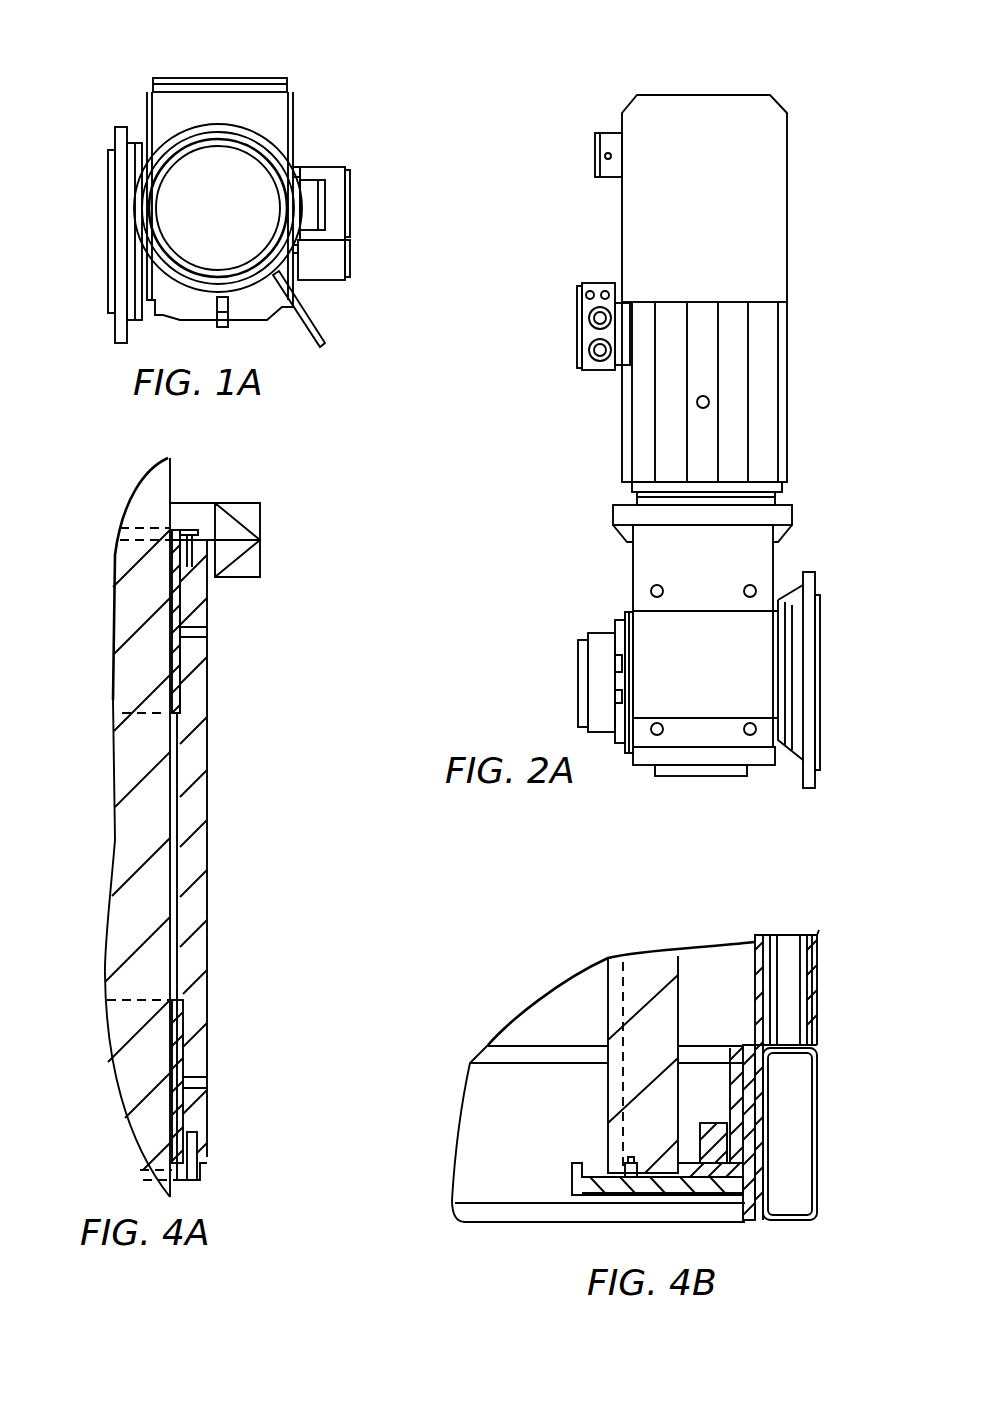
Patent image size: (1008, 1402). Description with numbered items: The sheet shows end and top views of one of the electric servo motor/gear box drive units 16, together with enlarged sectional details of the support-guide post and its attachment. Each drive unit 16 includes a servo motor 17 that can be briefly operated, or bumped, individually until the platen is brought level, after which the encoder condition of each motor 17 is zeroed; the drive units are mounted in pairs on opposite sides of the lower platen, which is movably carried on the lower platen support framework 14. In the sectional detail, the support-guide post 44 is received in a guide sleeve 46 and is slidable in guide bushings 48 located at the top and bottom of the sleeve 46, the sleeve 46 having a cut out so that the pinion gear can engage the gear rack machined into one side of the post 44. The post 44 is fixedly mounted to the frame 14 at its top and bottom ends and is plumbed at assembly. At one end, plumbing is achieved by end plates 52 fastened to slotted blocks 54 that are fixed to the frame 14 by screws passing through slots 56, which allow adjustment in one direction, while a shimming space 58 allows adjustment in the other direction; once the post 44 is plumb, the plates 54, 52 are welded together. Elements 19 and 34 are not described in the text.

In FIG. 4B, the lower platen support framework 14 is at (820, 990).
In FIG. 1A, the drive unit 16 is at (315, 105).
In FIG. 2A, the drive unit 16 is at (797, 203).
In FIG. 1A, the servo motor 17 is at (237, 168).
In FIG. 2A, the servo motor 17 is at (635, 228).
In FIG. 1A, the gearbox 19 is at (165, 77).
In FIG. 2A, the gearbox 19 is at (632, 606).
In FIG. 1A, the mounting plate 34 is at (123, 130).
In FIG. 2A, the mounting plate 34 is at (808, 572).
In FIG. 4A, the support-guide post 44 is at (128, 788).
In FIG. 4B, the support-guide post 44 is at (640, 968).
In FIG. 4A, the guide sleeve 46 is at (197, 793).
In FIG. 4A, the guide bushing 48 is at (183, 603).
In FIG. 4B, the end plate 52 is at (598, 1197).
In FIG. 4B, the slotted block 54 is at (703, 1120).
In FIG. 4B, the slot 56 is at (723, 1113).
In FIG. 4B, the shimming space 58 is at (742, 1192).